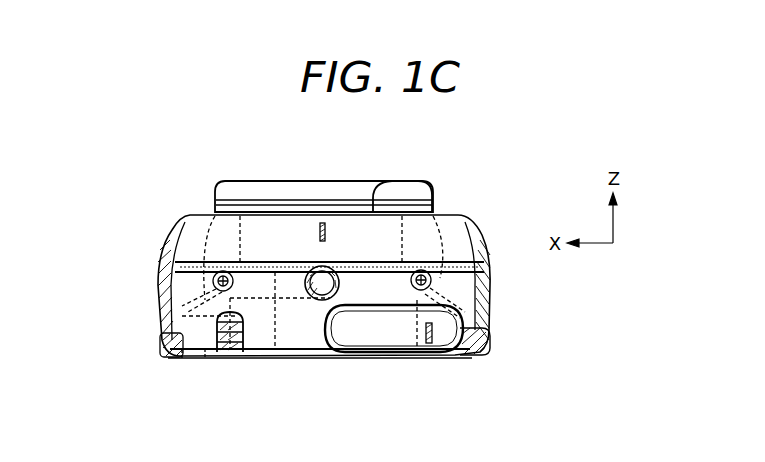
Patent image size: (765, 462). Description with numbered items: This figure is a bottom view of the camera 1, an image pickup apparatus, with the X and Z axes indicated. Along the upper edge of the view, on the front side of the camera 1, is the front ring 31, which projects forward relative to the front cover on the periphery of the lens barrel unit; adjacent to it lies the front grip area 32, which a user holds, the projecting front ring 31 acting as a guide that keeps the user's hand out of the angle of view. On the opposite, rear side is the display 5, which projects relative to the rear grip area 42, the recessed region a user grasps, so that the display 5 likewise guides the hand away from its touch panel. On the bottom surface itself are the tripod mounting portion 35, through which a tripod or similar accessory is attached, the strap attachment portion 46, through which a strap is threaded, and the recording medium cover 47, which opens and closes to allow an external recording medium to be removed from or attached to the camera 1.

The camera 1 is at (68, 183).
The display 5 is at (460, 358).
The front ring 31 is at (312, 181).
The front grip area 32 is at (388, 178).
The tripod mounting portion 35 is at (333, 284).
The rear grip area 42 is at (283, 358).
The strap attachment portion 46 is at (215, 350).
The recording medium cover 47 is at (448, 320).